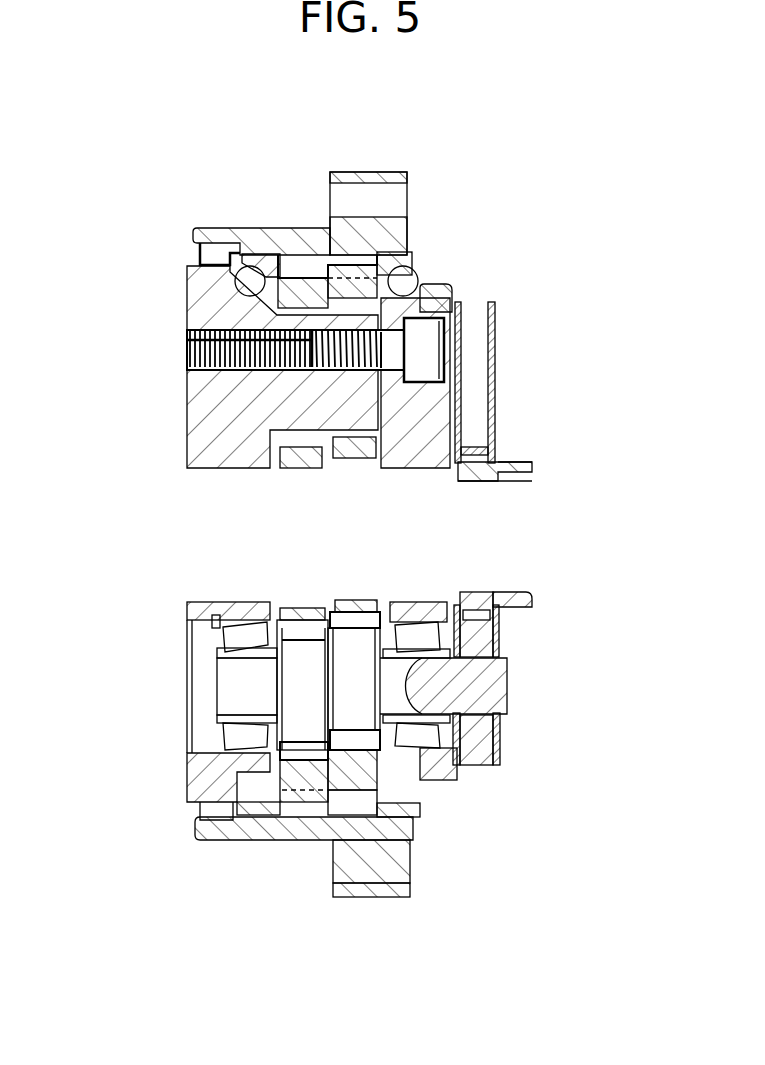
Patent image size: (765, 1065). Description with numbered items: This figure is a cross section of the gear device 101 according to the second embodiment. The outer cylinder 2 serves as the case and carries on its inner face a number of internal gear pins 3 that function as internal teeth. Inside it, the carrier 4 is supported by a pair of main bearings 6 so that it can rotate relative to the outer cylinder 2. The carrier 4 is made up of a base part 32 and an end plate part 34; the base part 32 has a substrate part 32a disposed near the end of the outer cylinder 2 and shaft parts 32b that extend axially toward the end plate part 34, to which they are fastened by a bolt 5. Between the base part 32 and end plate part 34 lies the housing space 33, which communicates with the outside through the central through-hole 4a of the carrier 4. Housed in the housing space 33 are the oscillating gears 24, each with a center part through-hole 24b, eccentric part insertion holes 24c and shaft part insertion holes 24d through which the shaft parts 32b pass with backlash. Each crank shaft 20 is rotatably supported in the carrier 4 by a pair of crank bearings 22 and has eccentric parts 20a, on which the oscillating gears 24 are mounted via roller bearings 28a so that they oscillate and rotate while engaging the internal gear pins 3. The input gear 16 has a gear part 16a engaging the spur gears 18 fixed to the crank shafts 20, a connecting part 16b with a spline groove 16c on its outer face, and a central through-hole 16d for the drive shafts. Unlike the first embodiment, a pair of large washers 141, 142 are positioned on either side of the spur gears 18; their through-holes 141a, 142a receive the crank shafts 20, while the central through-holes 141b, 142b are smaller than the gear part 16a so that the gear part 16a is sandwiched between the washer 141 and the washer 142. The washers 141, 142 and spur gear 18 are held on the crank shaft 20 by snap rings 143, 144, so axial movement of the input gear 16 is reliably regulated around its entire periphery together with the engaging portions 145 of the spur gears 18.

The gear device 101 is at (502, 279).
The outer cylinder 2 is at (270, 236).
The internal gear pin 3 is at (316, 262).
The carrier 4 is at (181, 810).
The through-hole 4a is at (216, 604).
The bolt 5 is at (453, 290).
The main bearing 6 is at (258, 256).
The input gear 16 is at (535, 425).
The gear part 16a is at (474, 452).
The connecting part 16b is at (515, 483).
The spline groove 16c is at (522, 465).
The through-hole 16d is at (480, 484).
The spur gear 18 is at (476, 676).
The crank shaft 20 is at (504, 679).
The eccentric part 20a is at (293, 710).
The crank bearing 22 is at (247, 742).
The oscillating gear 24 is at (371, 800).
The center part through-hole 24b is at (268, 603).
The eccentric part insertion hole 24c is at (353, 623).
The shaft part insertion hole 24d is at (350, 426).
The roller bearing 28a is at (305, 742).
The base part 32 is at (213, 302).
The substrate part 32a is at (210, 412).
The shaft part 32b is at (395, 398).
The housing space 33 is at (298, 598).
The end plate part 34 is at (440, 388).
The washer 141 is at (496, 763).
The through-hole 141a is at (499, 694).
The through-hole 141b is at (472, 596).
The washer 142 is at (458, 768).
The through-hole 142a is at (413, 608).
The through-hole 142b is at (456, 630).
The snap ring 143 is at (482, 740).
The snap ring 144 is at (337, 720).
The engaging portion 145 is at (468, 598).